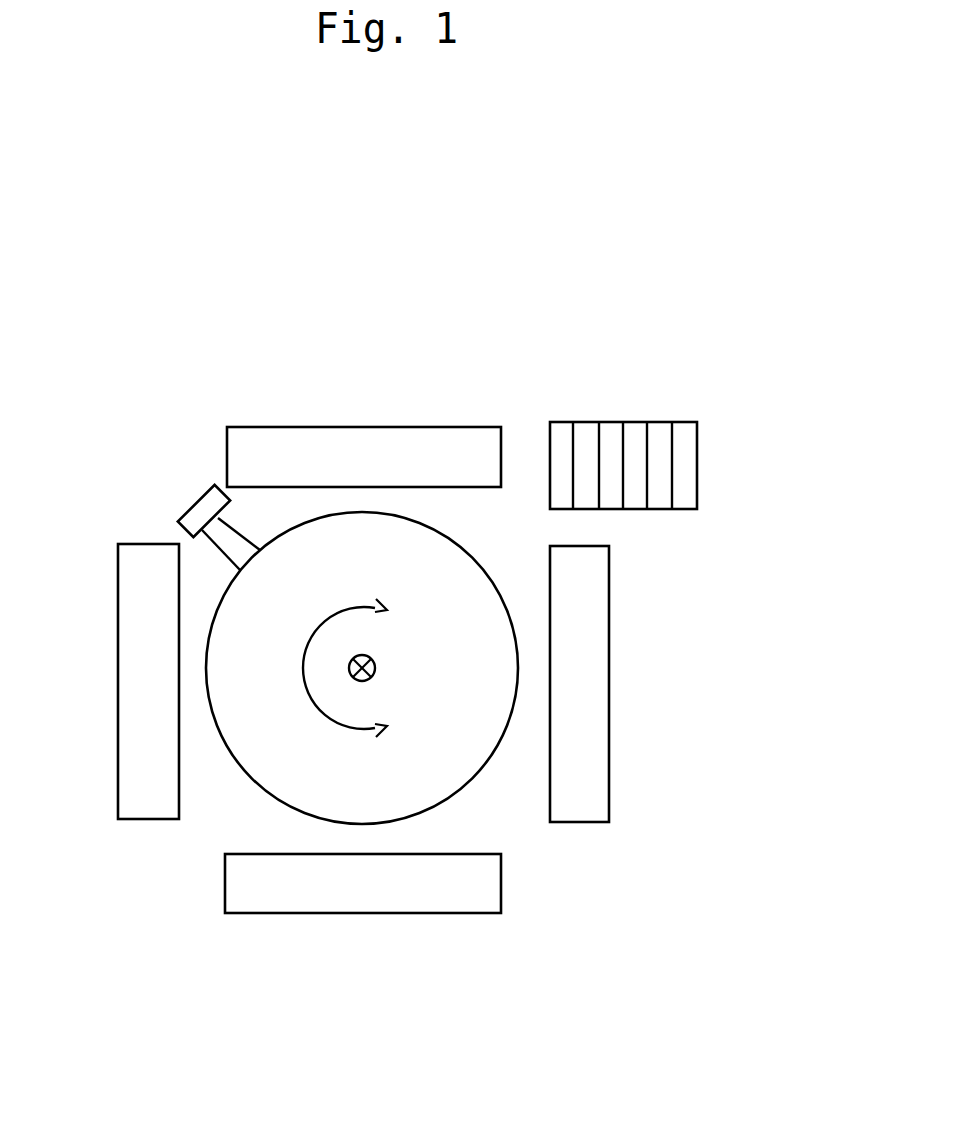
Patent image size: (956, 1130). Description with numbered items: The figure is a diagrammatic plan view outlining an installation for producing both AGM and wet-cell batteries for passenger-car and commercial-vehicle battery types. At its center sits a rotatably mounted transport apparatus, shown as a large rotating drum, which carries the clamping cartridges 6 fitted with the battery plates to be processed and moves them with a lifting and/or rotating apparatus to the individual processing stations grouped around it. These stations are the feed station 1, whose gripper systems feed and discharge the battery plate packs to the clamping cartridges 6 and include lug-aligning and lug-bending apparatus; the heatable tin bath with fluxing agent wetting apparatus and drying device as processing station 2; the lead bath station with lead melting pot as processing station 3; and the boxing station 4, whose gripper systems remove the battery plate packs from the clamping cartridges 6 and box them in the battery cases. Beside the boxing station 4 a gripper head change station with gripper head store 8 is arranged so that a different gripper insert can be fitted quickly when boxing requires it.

The feed station 1 is at (152, 703).
The processing station 2 is at (361, 892).
The processing station 3 is at (585, 712).
The boxing station 4 is at (321, 442).
The clamping cartridges 6 is at (206, 512).
The gripper head store 8 is at (690, 438).